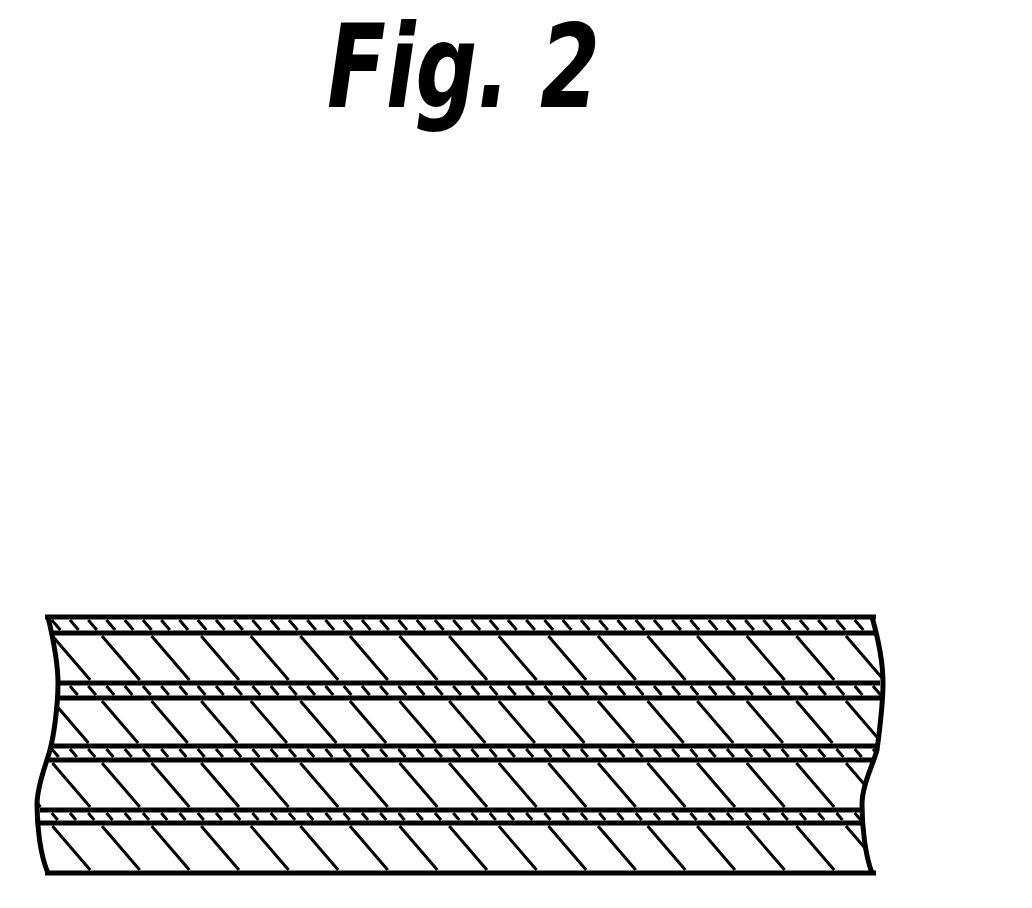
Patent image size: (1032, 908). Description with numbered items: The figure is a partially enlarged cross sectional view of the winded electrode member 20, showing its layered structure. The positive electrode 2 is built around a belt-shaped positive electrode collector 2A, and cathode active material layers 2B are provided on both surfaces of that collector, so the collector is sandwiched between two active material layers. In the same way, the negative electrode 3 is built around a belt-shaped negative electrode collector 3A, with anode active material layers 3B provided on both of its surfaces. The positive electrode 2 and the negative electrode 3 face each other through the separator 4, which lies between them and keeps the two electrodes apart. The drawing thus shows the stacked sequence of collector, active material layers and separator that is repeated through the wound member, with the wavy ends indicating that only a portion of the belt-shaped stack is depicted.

The winded electrode member 20 is at (742, 362).
The positive electrode 2 is at (468, 576).
The positive electrode collector 2A is at (328, 500).
The cathode active material layer 2B is at (328, 657).
The negative electrode 3 is at (468, 640).
The negative electrode collector 3A is at (453, 810).
The anode active material layer 3B is at (660, 777).
The separator 4 is at (792, 628).